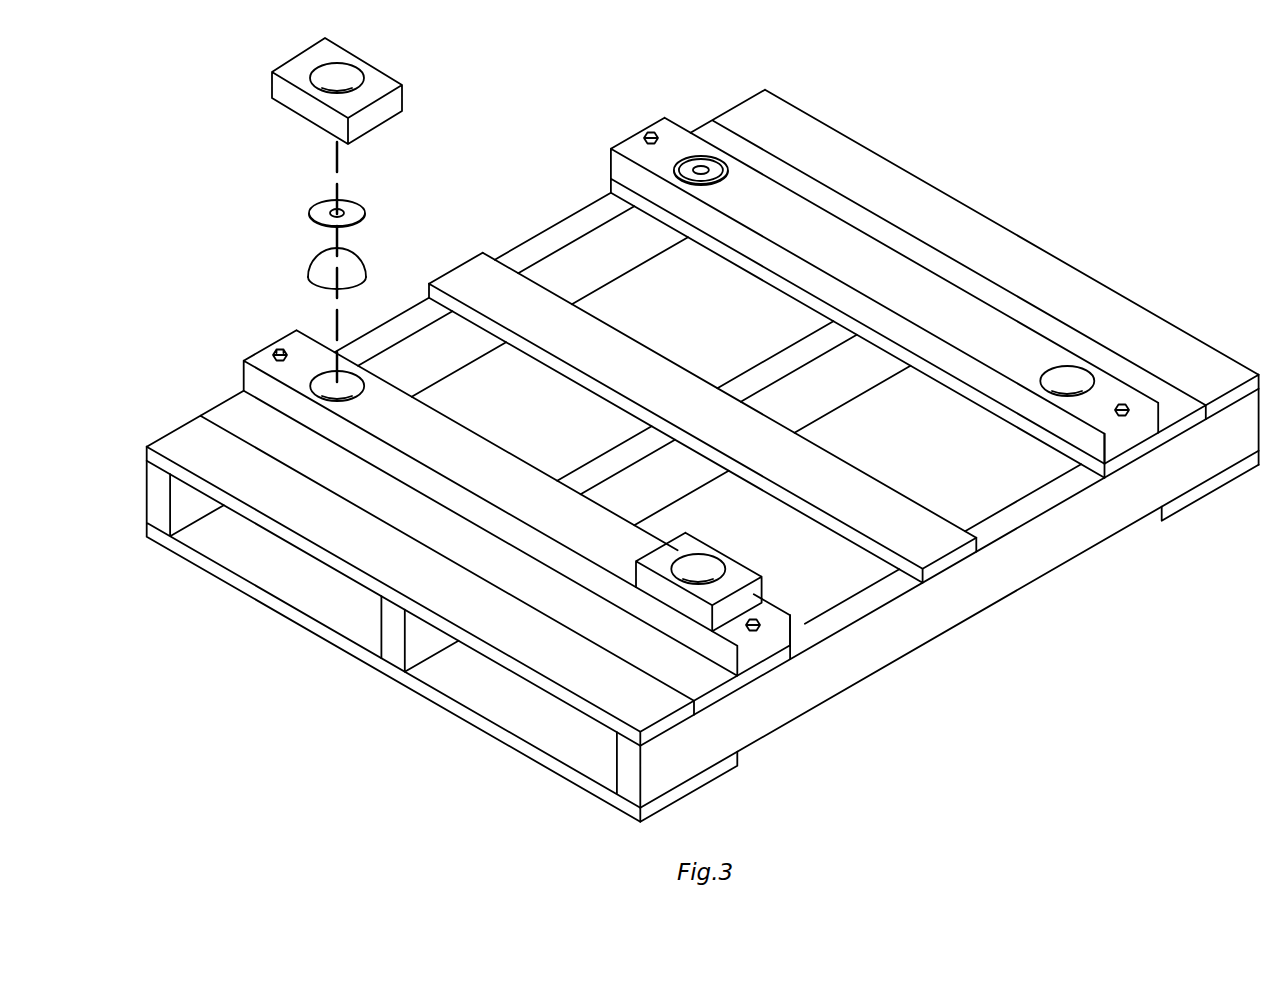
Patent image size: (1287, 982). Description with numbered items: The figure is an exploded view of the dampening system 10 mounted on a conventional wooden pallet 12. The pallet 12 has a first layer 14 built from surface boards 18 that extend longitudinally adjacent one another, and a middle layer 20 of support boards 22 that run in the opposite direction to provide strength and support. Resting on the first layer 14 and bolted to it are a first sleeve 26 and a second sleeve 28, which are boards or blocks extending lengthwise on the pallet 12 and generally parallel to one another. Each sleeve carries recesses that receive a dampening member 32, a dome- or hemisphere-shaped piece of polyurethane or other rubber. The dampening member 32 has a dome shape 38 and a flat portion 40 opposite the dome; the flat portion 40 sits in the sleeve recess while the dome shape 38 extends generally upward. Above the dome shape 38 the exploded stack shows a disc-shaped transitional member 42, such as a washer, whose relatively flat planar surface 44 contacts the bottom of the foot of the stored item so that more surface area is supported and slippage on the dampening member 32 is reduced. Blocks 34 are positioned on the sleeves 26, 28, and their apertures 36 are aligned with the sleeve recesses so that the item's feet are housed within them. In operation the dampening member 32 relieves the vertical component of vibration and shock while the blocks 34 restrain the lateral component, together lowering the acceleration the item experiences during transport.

The dampening system 10 is at (1040, 158).
The pallet 12 is at (1070, 268).
The first layer 14 is at (902, 178).
The surface boards 18 is at (1170, 333).
The middle layer 20 is at (380, 618).
The support boards 22 is at (975, 598).
The first sleeve 26 is at (636, 150).
The second sleeve 28 is at (495, 462).
The dampening member 32 is at (353, 282).
The blocks 34 is at (297, 70).
The apertures 36 is at (348, 75).
The dome shape 38 is at (327, 275).
The flat portion 40 is at (317, 308).
The transitional member 42 is at (355, 212).
The planar surface 44 is at (320, 213).